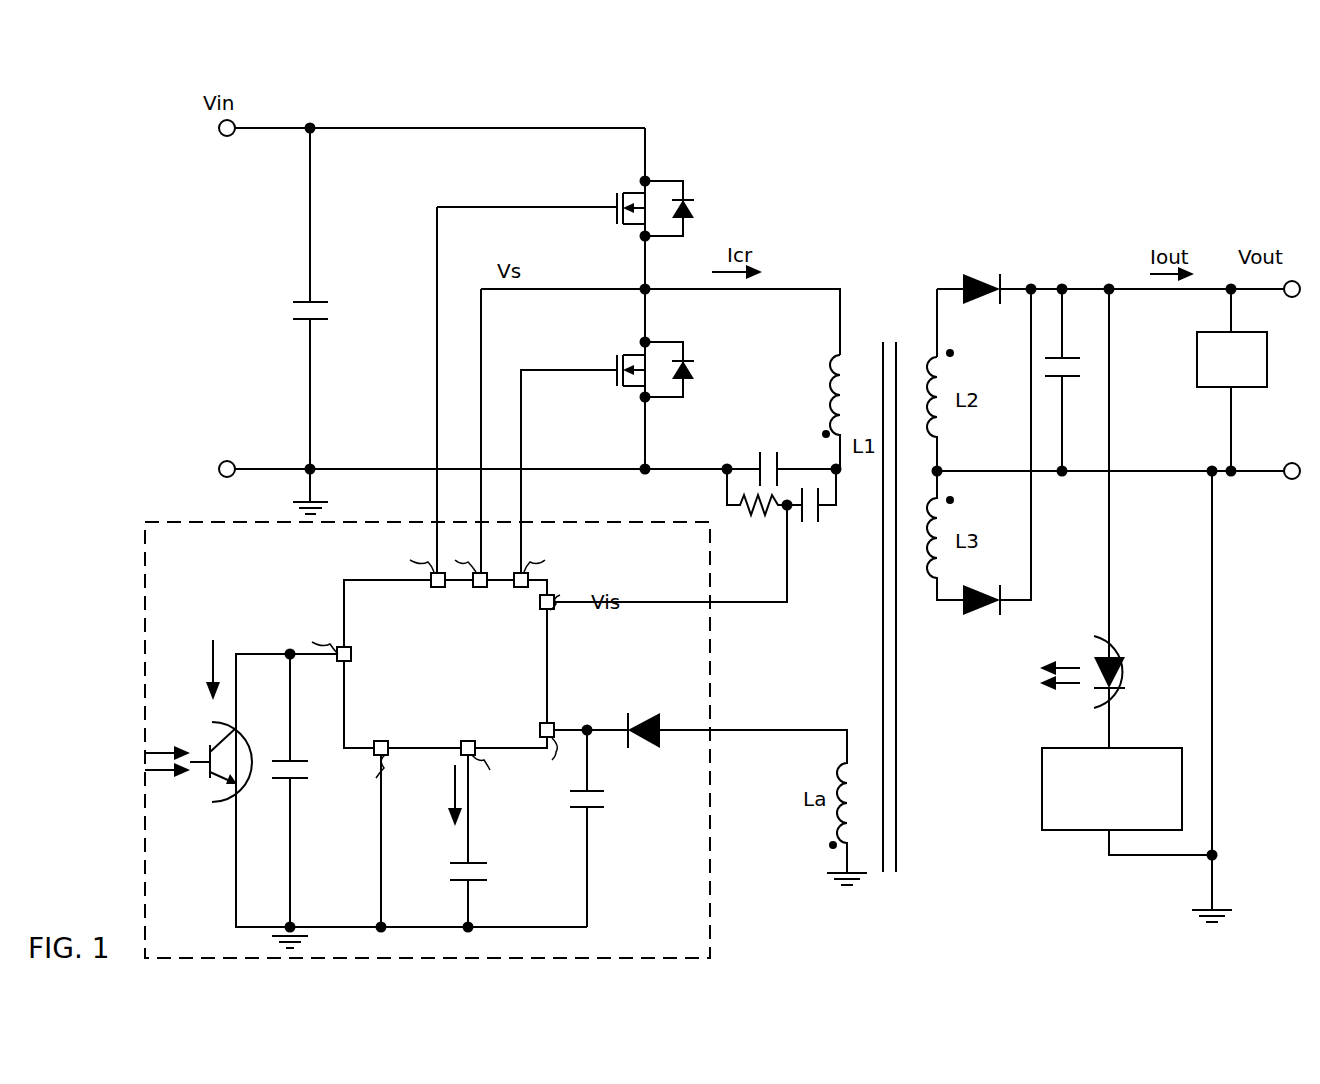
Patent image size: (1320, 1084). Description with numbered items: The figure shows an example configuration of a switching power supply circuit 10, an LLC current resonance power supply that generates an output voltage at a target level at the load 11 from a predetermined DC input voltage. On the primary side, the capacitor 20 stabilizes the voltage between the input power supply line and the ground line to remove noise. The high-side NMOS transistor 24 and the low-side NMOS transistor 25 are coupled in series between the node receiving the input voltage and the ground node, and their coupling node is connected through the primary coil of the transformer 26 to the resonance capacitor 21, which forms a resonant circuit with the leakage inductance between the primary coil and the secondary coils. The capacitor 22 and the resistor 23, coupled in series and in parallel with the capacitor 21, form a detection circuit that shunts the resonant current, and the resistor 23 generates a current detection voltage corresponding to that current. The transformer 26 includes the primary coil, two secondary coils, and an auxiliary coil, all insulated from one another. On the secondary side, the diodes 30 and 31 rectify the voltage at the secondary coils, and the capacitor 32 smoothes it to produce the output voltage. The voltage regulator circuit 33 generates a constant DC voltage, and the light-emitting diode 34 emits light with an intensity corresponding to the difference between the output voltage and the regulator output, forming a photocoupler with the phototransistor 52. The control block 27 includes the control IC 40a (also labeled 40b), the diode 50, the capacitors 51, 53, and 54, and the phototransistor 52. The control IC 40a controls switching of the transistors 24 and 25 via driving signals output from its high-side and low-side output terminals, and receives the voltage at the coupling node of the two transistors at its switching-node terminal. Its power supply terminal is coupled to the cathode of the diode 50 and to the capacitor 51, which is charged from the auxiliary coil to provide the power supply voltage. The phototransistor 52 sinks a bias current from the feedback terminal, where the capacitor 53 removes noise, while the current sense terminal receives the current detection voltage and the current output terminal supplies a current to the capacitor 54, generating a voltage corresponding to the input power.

The switching power supply circuit 10 is at (1048, 98).
The load 11 is at (1270, 344).
The capacitor 20 is at (320, 302).
The capacitor 21 is at (770, 452).
The capacitor 22 is at (824, 522).
The resistor 23 is at (758, 512).
The NMOS transistor 24 is at (614, 224).
The NMOS transistor 25 is at (614, 386).
The transformer 26 is at (888, 340).
The control block 27 is at (165, 522).
The diode 30 is at (974, 276).
The diode 31 is at (970, 614).
The capacitor 32 is at (1076, 378).
The voltage regulator circuit 33 is at (1158, 750).
The light-emitting diode 34 is at (1120, 658).
The control IC 40a is at (447, 506).
The control IC 40b is at (338, 578).
The diode 50 is at (632, 746).
The capacitor 51 is at (570, 794).
The phototransistor 52 is at (212, 800).
The capacitor 53 is at (300, 780).
The capacitor 54 is at (488, 882).